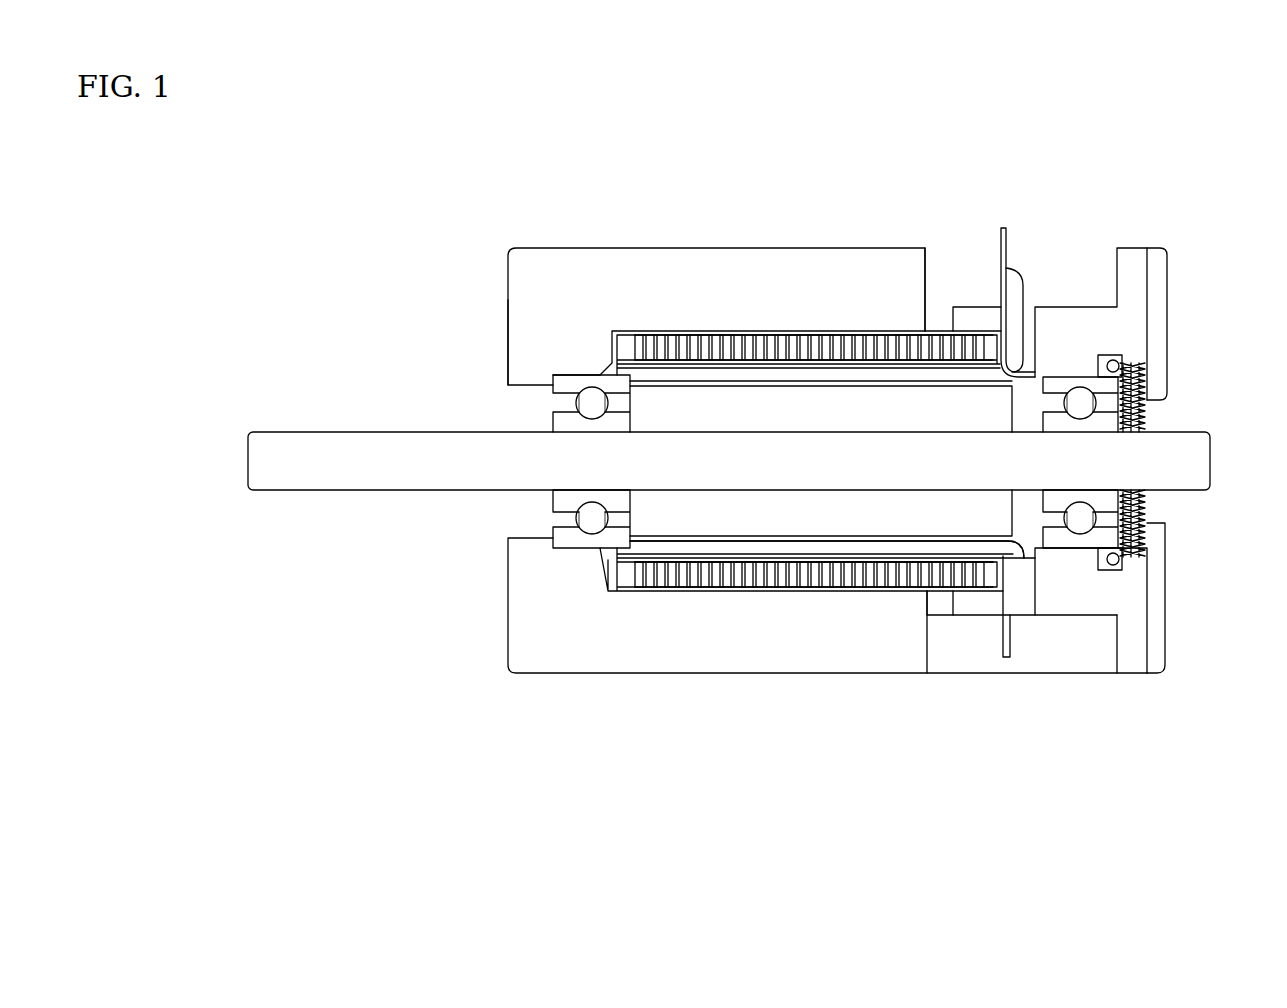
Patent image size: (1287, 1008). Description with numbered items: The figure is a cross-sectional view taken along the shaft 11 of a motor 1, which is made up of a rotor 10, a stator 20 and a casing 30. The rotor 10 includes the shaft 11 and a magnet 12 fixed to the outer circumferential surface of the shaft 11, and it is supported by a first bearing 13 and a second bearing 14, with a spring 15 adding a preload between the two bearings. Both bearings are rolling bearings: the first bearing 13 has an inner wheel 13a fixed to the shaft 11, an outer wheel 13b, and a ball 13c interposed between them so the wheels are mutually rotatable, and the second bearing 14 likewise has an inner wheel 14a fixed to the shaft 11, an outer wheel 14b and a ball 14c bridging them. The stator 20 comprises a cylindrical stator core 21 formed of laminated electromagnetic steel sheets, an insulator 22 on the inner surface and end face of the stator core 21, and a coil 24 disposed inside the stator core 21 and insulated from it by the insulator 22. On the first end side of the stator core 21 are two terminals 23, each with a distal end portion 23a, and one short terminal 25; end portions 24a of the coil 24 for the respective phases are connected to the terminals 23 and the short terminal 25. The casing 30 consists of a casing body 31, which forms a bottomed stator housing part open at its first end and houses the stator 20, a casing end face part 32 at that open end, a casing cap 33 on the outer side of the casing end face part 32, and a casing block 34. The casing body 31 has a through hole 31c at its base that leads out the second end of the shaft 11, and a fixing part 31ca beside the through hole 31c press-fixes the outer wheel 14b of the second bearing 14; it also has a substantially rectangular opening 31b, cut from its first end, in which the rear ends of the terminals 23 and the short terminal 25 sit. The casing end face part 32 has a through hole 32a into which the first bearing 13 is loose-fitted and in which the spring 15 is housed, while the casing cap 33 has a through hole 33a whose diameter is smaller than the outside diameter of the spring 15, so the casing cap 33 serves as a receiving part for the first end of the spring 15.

The motor 1 is at (757, 91).
The rotor 10 is at (835, 181).
The shaft 11 is at (682, 452).
The magnet 12 is at (723, 400).
The first bearing 13 is at (1037, 385).
The inner wheel 13a is at (1107, 500).
The outer wheel 13b is at (1112, 540).
The ball 13c is at (1092, 522).
The second bearing 14 is at (590, 375).
The inner wheel 14a is at (558, 500).
The outer wheel 14b is at (560, 543).
The ball 14c is at (585, 518).
The spring 15 is at (1117, 387).
The stator 20 is at (987, 707).
The stator core 21 is at (920, 577).
The insulator 22 is at (962, 607).
The terminal 23 is at (1000, 588).
The distal end portion 23a is at (1007, 618).
The coil 24 is at (866, 552).
The end portions 24a is at (1017, 295).
The short terminal 25 is at (1005, 238).
The casing 30 is at (1098, 802).
The casing body 31 is at (670, 658).
The opening 31b is at (957, 275).
The through hole 31c is at (517, 387).
The fixing part 31ca is at (563, 372).
The casing end face part 32 is at (1133, 660).
The through hole 32a is at (1080, 550).
The casing cap 33 is at (1157, 660).
The through hole 33a is at (1152, 402).
The casing block 34 is at (1043, 660).